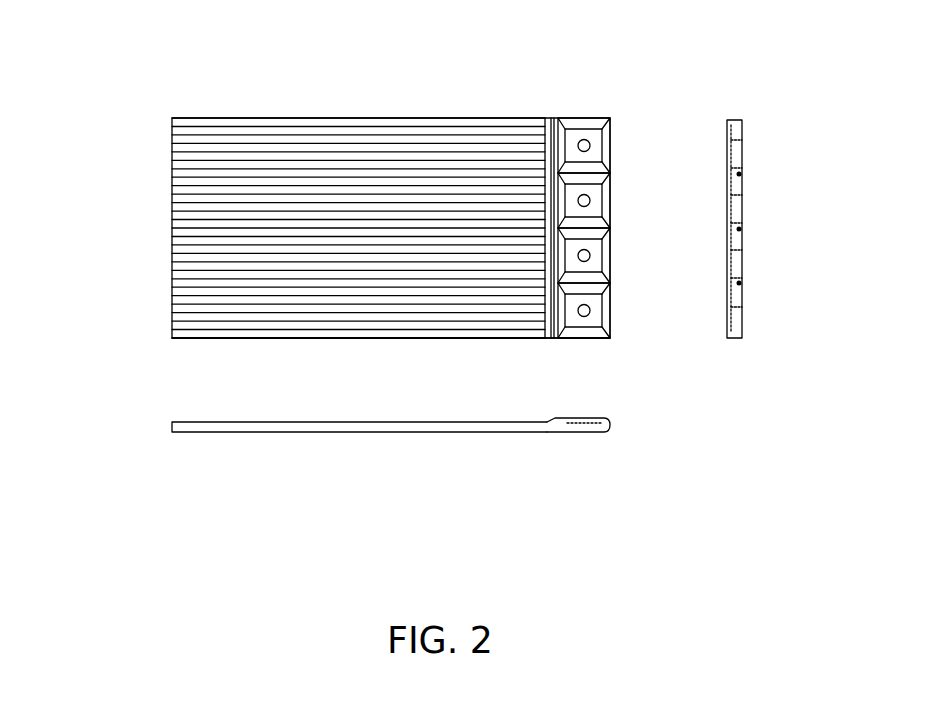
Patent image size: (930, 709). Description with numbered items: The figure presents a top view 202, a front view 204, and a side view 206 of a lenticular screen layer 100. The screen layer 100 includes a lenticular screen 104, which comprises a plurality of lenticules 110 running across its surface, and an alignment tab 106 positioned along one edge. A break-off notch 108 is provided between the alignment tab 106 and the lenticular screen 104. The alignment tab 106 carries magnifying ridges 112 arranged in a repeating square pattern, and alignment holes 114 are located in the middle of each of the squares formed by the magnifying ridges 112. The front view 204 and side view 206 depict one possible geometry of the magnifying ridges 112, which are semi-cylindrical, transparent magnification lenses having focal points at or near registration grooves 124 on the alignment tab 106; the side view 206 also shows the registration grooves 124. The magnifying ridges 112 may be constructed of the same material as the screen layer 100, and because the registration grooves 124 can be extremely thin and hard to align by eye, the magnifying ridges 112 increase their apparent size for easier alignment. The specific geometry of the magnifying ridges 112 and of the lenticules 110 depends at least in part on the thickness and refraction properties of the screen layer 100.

The lenticular screen layer 100 is at (162, 240).
The lenticular screen 104 is at (452, 339).
The alignment tab 106 is at (561, 117).
The break-off notch 108 is at (551, 424).
The lenticules 110 is at (395, 124).
The magnifying ridges 112 is at (730, 174).
The holes 114 is at (586, 139).
The registration grooves 124 is at (739, 283).
The top view 202 is at (183, 86).
The front view 204 is at (194, 453).
The side view 206 is at (758, 103).